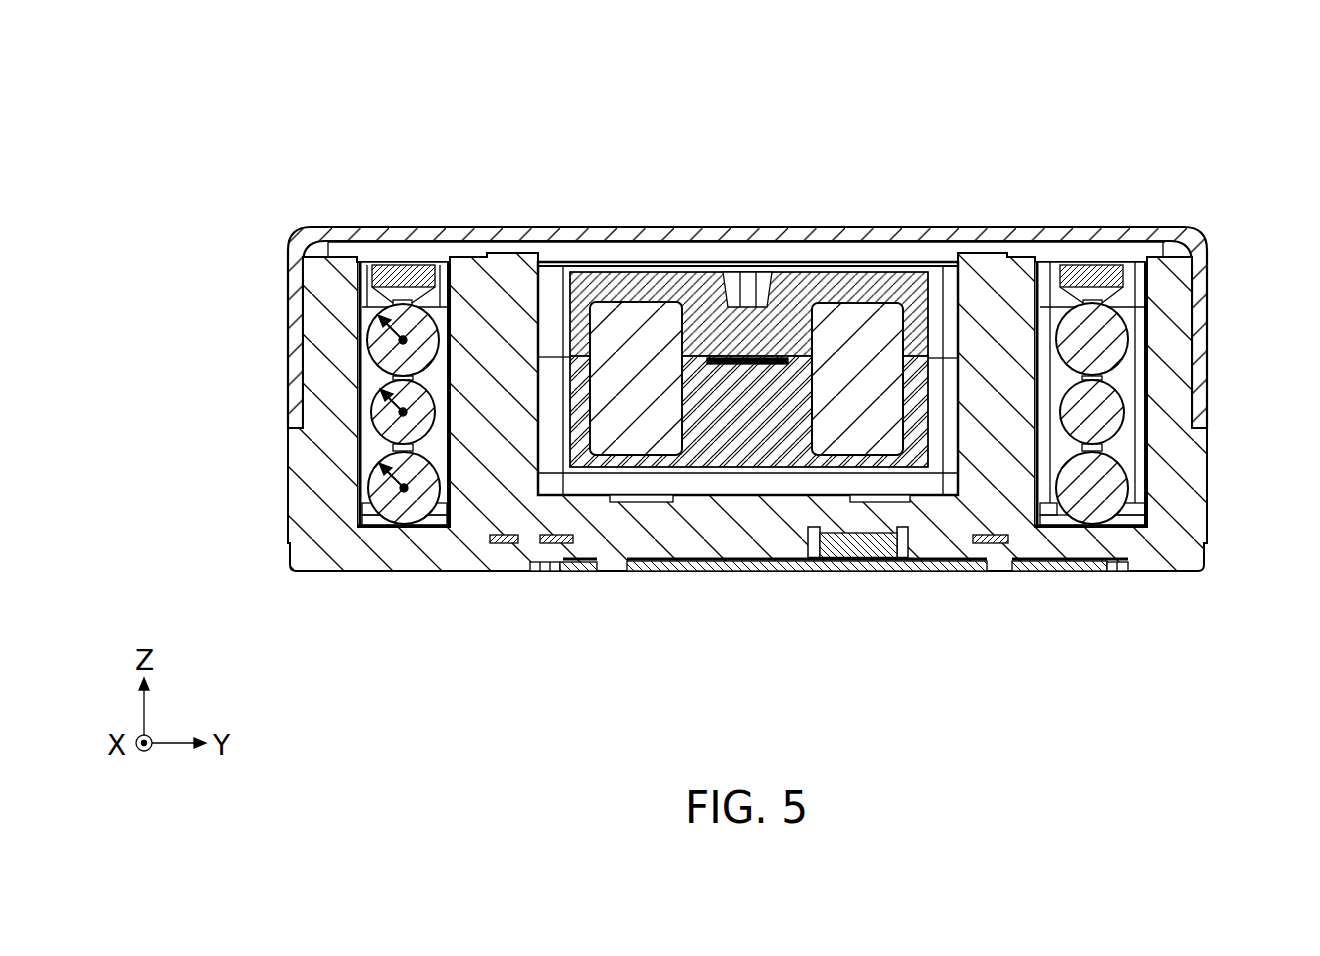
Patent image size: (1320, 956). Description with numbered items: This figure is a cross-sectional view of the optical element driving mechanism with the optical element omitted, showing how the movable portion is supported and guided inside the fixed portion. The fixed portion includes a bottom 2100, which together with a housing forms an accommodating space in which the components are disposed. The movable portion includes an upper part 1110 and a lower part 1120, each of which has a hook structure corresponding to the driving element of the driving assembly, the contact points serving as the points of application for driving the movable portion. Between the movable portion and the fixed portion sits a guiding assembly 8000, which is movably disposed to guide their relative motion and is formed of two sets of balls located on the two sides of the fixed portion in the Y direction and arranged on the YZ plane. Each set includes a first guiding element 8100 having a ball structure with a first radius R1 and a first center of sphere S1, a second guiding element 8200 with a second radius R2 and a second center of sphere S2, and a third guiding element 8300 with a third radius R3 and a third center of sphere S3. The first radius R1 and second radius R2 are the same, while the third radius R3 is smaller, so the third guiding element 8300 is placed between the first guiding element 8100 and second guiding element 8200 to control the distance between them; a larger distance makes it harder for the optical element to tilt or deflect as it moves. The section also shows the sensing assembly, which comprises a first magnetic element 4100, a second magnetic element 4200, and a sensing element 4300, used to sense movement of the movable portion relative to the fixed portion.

The guiding assembly 8000 is at (182, 44).
The first guiding element 8100 is at (1235, 338).
The second guiding element 8200 is at (1235, 488).
The third guiding element 8300 is at (1235, 412).
The upper part 1110 is at (711, 295).
The lower part 1120 is at (733, 445).
The bottom 2100 is at (504, 560).
The first magnetic element 4100 is at (863, 335).
The second magnetic element 4200 is at (632, 335).
The sensing element 4300 is at (860, 552).
The first radius R1 is at (385, 330).
The second radius R2 is at (385, 477).
The third radius R3 is at (385, 404).
The first center of sphere S1 is at (376, 352).
The second center of sphere S2 is at (376, 500).
The third center of sphere S3 is at (376, 424).